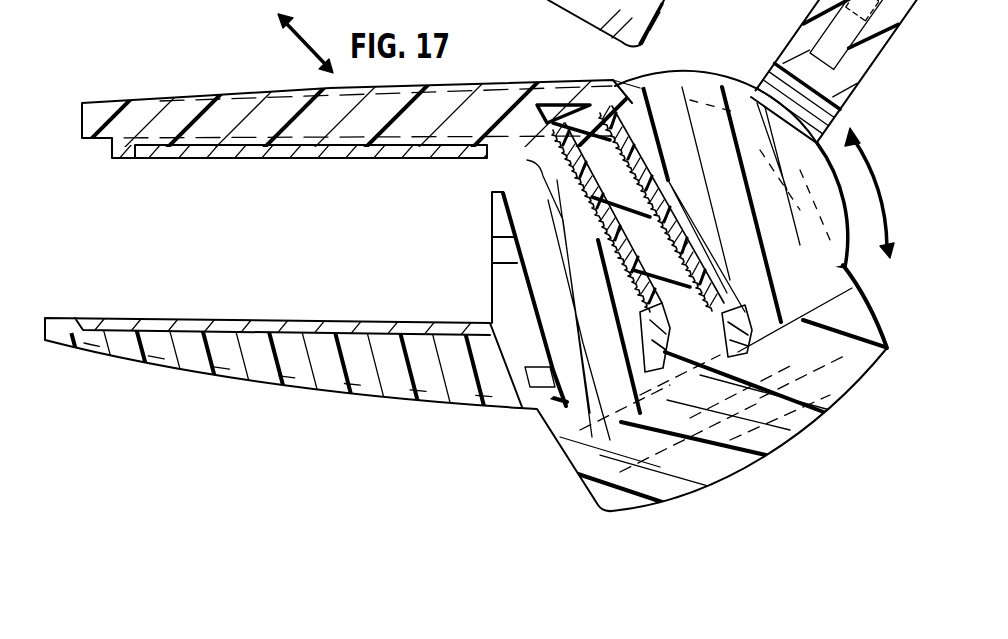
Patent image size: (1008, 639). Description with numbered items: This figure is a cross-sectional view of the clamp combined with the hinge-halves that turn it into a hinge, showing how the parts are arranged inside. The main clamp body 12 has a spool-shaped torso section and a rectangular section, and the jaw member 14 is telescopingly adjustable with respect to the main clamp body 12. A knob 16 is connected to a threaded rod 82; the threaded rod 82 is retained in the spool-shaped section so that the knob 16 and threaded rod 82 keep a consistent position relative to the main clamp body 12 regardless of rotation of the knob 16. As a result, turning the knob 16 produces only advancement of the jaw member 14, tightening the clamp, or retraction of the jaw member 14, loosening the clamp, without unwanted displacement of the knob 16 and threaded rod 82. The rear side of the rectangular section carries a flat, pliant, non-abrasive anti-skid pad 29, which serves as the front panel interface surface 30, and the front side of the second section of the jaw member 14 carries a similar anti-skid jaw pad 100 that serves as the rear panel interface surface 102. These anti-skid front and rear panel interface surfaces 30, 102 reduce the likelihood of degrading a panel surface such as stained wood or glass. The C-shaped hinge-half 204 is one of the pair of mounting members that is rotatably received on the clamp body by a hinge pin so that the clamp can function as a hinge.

The main clamp body 12 is at (292, 360).
The jaw member 14 is at (280, 110).
The knob 16 is at (767, 440).
The anti-skid pad 29 is at (217, 152).
The front panel interface surface 30 is at (320, 159).
The threaded rod 82 is at (655, 130).
The anti-skid jaw pad 100 is at (215, 327).
The rear panel interface surface 102 is at (318, 322).
The hinge-half 204 is at (800, 43).